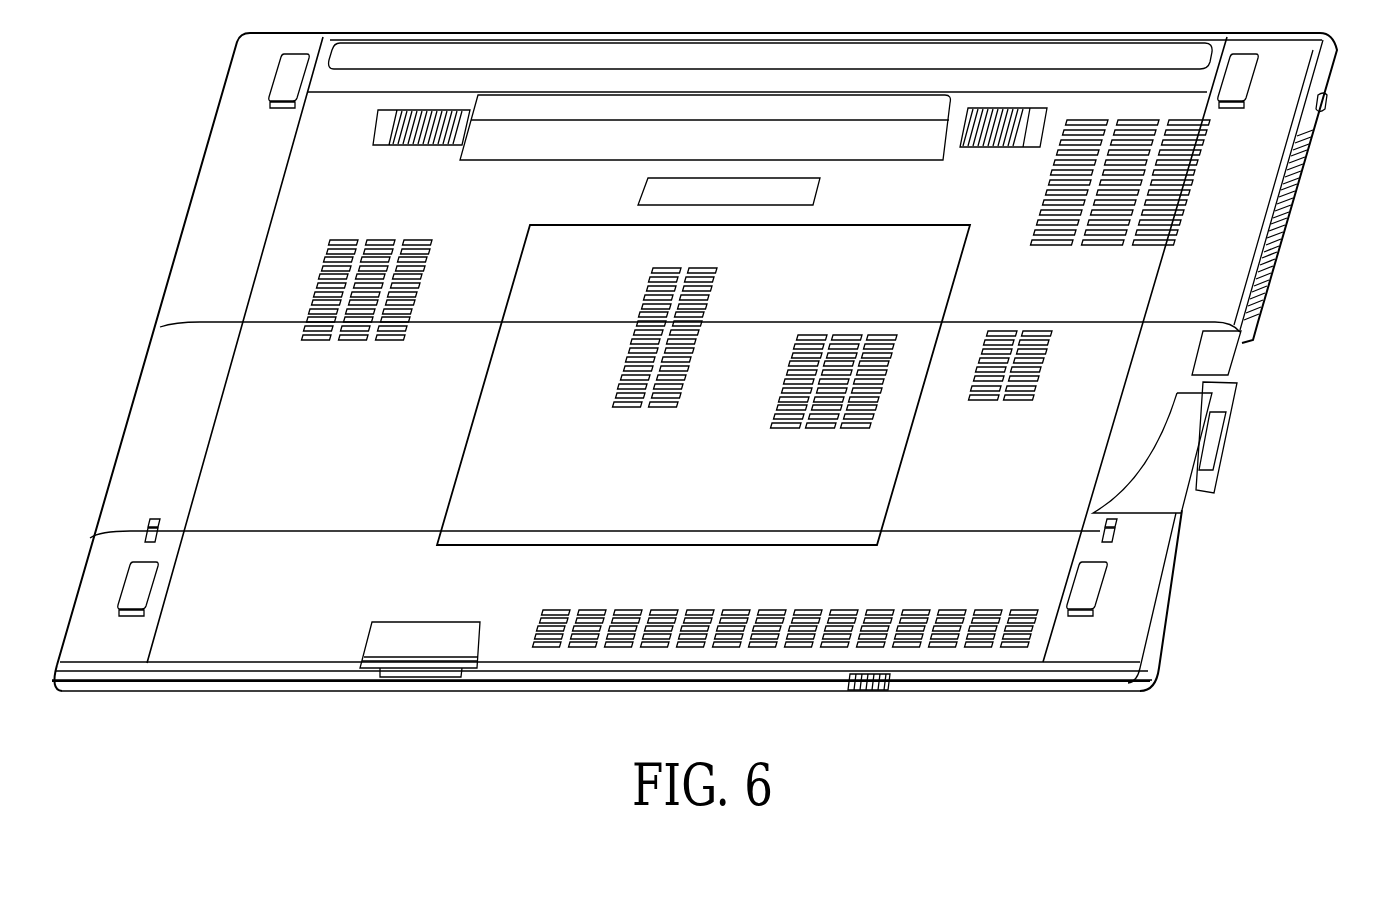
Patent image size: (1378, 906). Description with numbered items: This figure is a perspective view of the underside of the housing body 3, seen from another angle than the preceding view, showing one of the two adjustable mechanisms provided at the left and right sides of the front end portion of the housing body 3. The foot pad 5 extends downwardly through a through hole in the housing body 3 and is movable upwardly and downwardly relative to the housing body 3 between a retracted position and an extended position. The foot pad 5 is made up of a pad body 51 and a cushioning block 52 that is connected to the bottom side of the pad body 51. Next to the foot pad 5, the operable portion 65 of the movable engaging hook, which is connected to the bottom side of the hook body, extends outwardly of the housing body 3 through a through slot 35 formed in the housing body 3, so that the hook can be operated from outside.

The housing body 3 is at (1242, 182).
The foot pad 5 is at (1172, 653).
The through slot 35 is at (1112, 536).
The pad body 51 is at (1096, 613).
The cushioning block 52 is at (1085, 588).
The operable portion 65 is at (1112, 523).